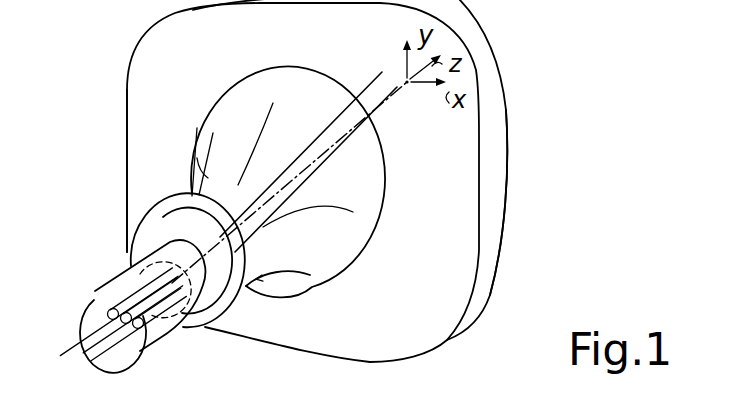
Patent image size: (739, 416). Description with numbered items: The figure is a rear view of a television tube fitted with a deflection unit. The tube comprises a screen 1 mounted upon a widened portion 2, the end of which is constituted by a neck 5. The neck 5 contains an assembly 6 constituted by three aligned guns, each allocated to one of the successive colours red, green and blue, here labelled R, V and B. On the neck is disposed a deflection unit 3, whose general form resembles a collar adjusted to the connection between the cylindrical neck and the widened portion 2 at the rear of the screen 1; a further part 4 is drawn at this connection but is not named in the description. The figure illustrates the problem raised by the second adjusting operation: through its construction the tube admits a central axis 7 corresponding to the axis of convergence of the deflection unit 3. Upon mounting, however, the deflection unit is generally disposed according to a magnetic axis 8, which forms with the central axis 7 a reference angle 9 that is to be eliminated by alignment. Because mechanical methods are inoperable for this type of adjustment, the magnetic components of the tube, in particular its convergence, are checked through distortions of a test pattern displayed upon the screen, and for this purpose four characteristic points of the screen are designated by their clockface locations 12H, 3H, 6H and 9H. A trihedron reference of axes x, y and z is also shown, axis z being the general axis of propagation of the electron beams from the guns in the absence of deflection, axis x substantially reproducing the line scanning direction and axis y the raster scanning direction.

The screen 1 is at (507, 112).
The widened portion 2 is at (441, 211).
The deflection unit 3 is at (295, 252).
The three o'clock characteristic point 3H is at (510, 169).
The mounting ring / flange 4 is at (203, 328).
The neck 5 is at (146, 336).
The assembly of three aligned guns 6 is at (118, 276).
The six o'clock characteristic point 6H is at (350, 332).
The central axis 7 is at (322, 152).
The magnetic axis 8 is at (306, 150).
The reference angle 9 is at (371, 88).
The nine o'clock characteristic point 9H is at (150, 129).
The twelve o'clock characteristic point 12H is at (350, 25).
The red gun R is at (60, 357).
The green gun V is at (72, 366).
The blue gun B is at (92, 365).